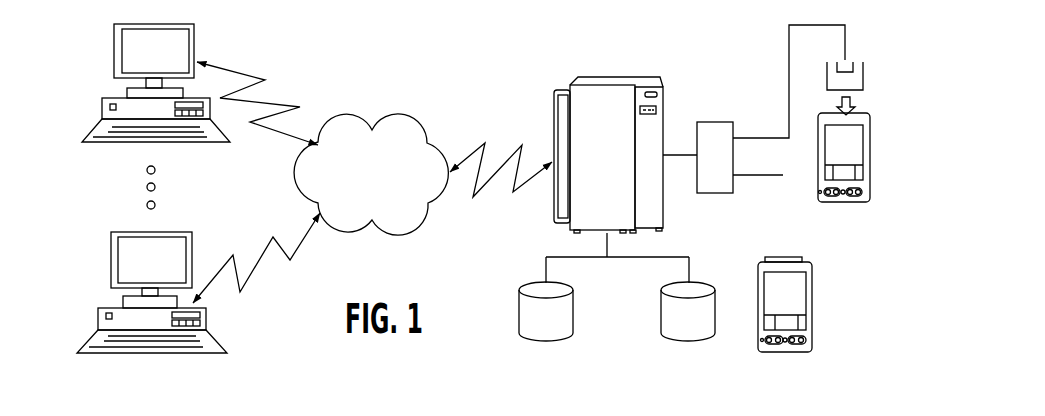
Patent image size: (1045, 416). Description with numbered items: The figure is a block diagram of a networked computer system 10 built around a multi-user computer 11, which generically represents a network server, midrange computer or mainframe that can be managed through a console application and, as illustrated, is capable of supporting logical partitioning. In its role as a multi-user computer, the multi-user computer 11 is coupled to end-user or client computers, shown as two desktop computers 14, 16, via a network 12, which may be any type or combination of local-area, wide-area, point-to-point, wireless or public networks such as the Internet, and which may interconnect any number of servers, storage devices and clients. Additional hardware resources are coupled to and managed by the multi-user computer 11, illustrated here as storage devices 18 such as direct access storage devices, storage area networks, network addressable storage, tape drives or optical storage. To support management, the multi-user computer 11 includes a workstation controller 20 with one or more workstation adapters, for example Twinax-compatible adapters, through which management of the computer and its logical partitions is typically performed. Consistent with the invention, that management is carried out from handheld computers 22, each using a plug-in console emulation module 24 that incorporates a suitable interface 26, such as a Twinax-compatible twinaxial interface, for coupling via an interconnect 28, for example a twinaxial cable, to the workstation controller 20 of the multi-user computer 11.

The networked computer system 10 is at (448, 65).
The multi-user computer 11 is at (587, 80).
The network 12 is at (372, 127).
The desktop computer 14 is at (115, 42).
The desktop computer 16 is at (110, 233).
The storage device 18 is at (572, 332).
The workstation controller 20 is at (717, 120).
The handheld computer 22 is at (872, 158).
The console emulation module 24 is at (862, 80).
The interface 26 is at (847, 63).
The interconnect 28 is at (789, 58).